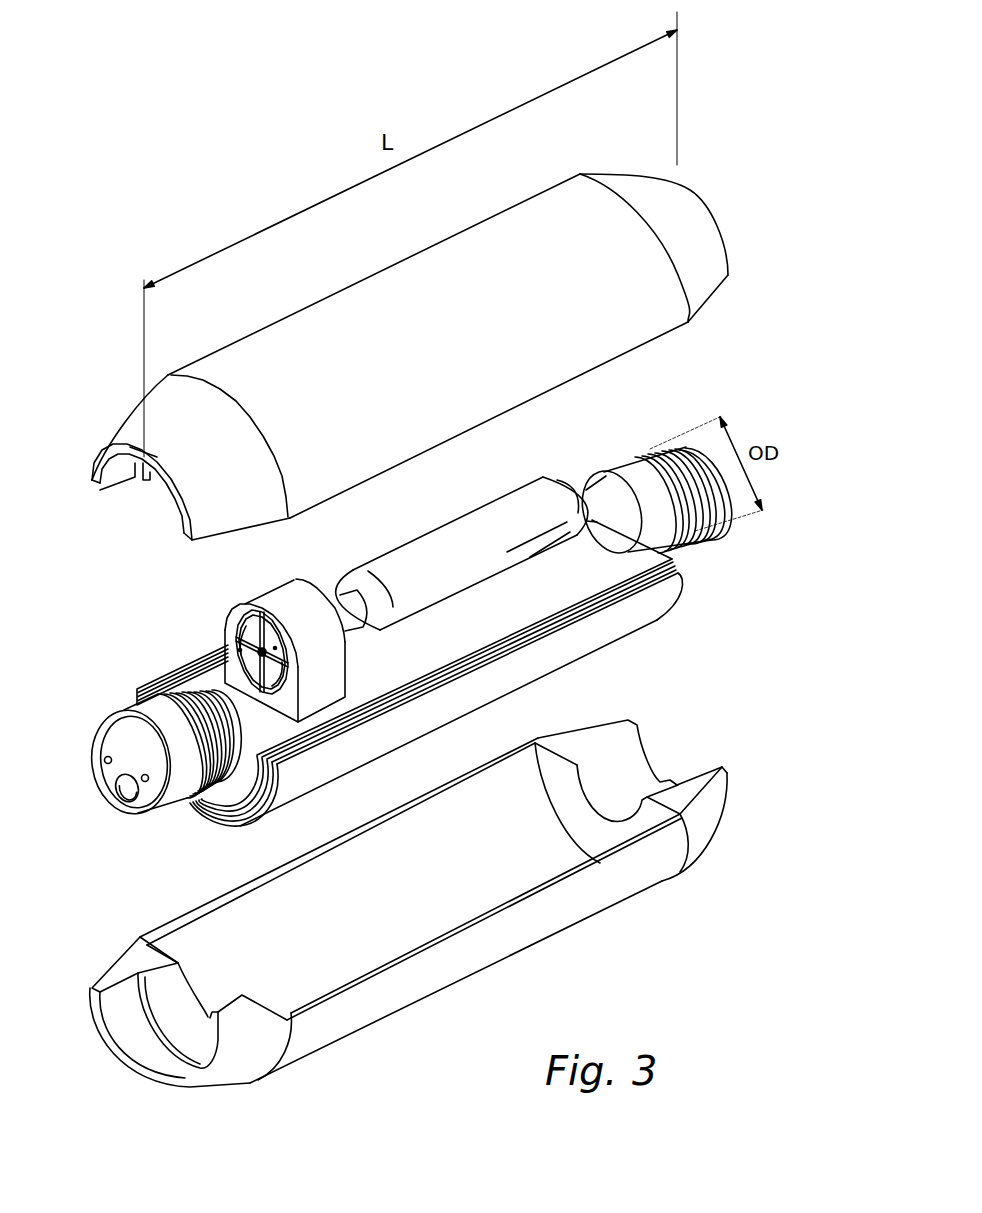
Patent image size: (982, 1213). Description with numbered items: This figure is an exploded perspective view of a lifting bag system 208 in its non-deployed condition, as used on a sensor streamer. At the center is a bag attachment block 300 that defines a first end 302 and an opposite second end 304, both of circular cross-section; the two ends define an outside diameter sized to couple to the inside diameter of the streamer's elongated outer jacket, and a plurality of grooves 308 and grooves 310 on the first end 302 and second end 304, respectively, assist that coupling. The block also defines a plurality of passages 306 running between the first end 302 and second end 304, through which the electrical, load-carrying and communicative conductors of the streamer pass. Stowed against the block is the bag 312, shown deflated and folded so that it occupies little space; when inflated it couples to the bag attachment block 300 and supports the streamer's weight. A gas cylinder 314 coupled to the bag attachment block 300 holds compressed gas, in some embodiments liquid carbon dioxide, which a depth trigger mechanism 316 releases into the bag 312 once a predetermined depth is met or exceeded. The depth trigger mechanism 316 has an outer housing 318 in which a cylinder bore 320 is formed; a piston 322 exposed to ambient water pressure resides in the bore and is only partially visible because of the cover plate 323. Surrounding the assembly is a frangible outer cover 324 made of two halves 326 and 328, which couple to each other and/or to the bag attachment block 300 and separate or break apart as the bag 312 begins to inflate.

The lifting bag system 208 is at (160, 152).
The bag attachment block 300 is at (480, 623).
The first end 302 is at (92, 720).
The second end 304 is at (707, 445).
The passages 306 is at (145, 783).
The grooves 308 is at (167, 690).
The grooves 310 is at (613, 450).
The bag 312 is at (608, 630).
The gas cylinder 314 is at (440, 535).
The depth trigger mechanism 316 is at (273, 593).
The outer housing 318 is at (328, 665).
The cylinder bore 320 is at (245, 650).
The piston 322 is at (247, 628).
The cover plate 323 is at (282, 683).
The outer cover 324 is at (515, 970).
The outer cover half 326 is at (478, 869).
The outer cover half 328 is at (370, 277).